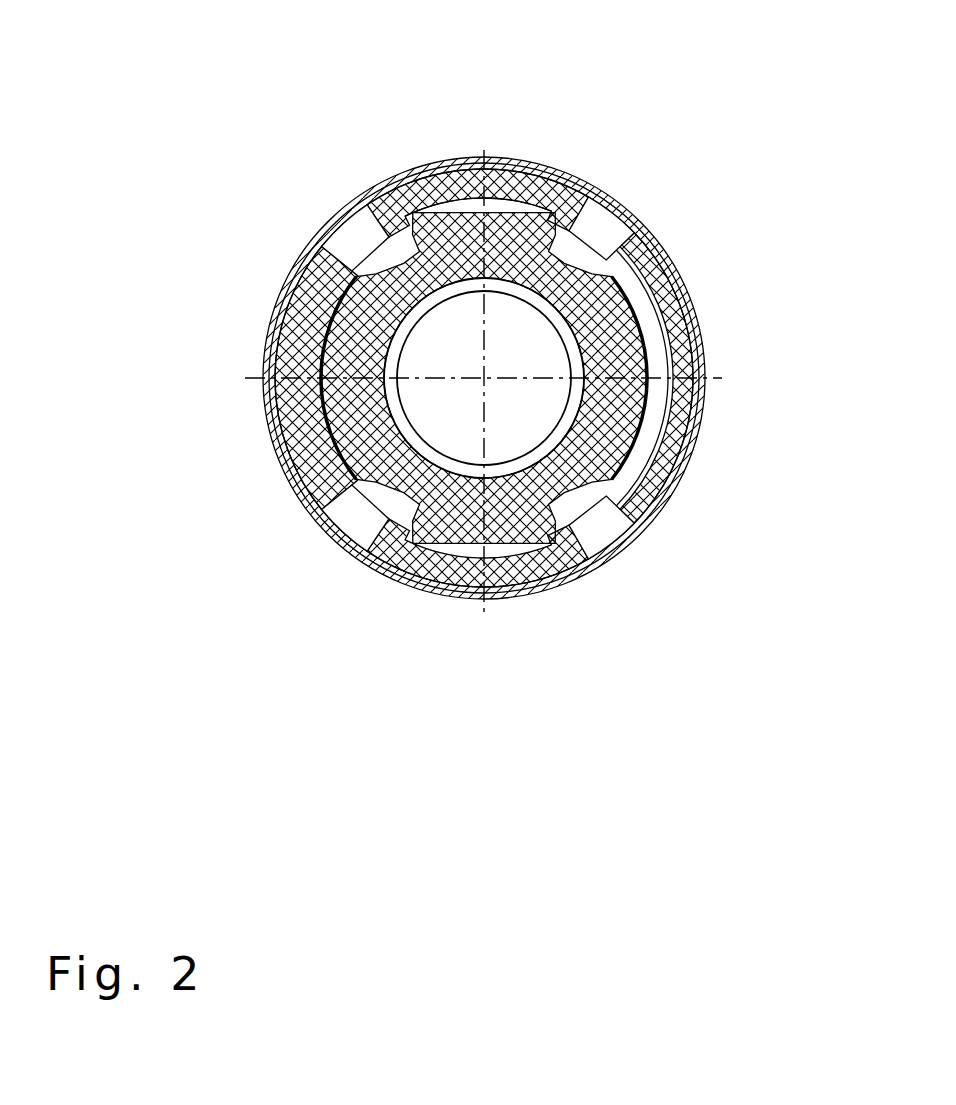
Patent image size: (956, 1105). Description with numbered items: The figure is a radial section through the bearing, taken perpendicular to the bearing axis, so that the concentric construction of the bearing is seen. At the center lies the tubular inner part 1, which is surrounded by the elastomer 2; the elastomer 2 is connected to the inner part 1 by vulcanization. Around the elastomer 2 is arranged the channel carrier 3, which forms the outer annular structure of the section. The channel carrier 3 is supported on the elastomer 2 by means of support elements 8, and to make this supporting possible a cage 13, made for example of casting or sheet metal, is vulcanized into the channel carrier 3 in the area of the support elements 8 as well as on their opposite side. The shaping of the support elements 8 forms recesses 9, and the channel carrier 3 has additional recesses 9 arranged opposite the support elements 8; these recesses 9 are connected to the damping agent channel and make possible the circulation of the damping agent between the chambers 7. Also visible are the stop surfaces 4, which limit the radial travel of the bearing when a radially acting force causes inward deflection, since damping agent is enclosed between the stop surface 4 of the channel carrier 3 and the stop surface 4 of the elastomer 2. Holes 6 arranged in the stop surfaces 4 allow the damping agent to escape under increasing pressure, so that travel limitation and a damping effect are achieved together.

The inner part 1 is at (565, 344).
The elastomer 2 is at (542, 578).
The channel carrier 3 is at (691, 262).
The stop surface 4 is at (275, 318).
The hole 6 is at (318, 384).
The chambers 7 is at (348, 270).
The support elements 8 is at (400, 197).
The recesses 9 is at (368, 213).
The cage 13 is at (538, 205).